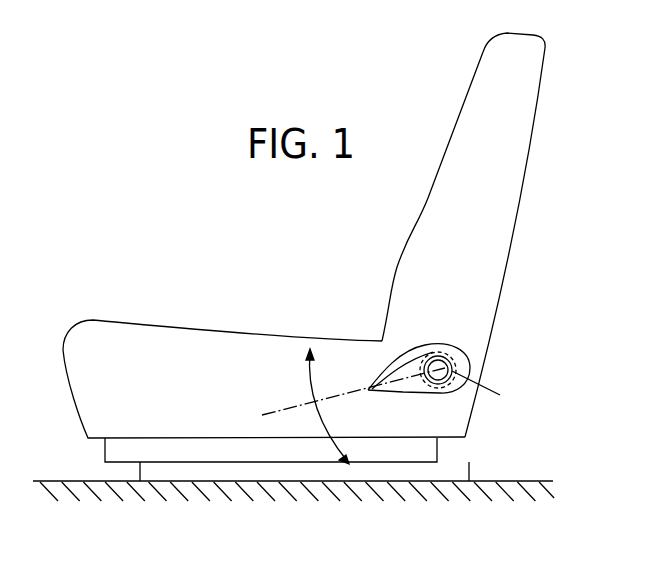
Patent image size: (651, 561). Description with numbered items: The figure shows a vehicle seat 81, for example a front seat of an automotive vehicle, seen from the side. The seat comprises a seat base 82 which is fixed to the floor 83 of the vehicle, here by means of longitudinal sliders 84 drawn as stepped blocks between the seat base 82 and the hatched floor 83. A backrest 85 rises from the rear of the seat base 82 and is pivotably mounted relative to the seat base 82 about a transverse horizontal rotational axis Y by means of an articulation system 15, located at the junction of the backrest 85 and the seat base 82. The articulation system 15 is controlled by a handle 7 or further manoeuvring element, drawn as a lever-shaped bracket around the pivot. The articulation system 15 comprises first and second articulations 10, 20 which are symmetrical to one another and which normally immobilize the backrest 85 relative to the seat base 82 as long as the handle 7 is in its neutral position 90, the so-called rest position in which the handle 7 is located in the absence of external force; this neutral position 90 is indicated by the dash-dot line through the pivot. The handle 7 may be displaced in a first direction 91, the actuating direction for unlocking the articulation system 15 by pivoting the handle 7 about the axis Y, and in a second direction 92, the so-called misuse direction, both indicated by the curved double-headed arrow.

The vehicle seat 81 is at (352, 253).
The seat base 82 is at (135, 347).
The backrest 85 is at (517, 135).
The handle 7 is at (385, 375).
The first articulation 10 is at (503, 357).
The second articulation 20 is at (470, 353).
The articulation system 15 is at (457, 347).
The neutral position 90 is at (278, 410).
The first direction 91 is at (307, 385).
The second direction 92 is at (320, 423).
The longitudinal sliders 84 is at (479, 463).
The floor 83 is at (540, 480).